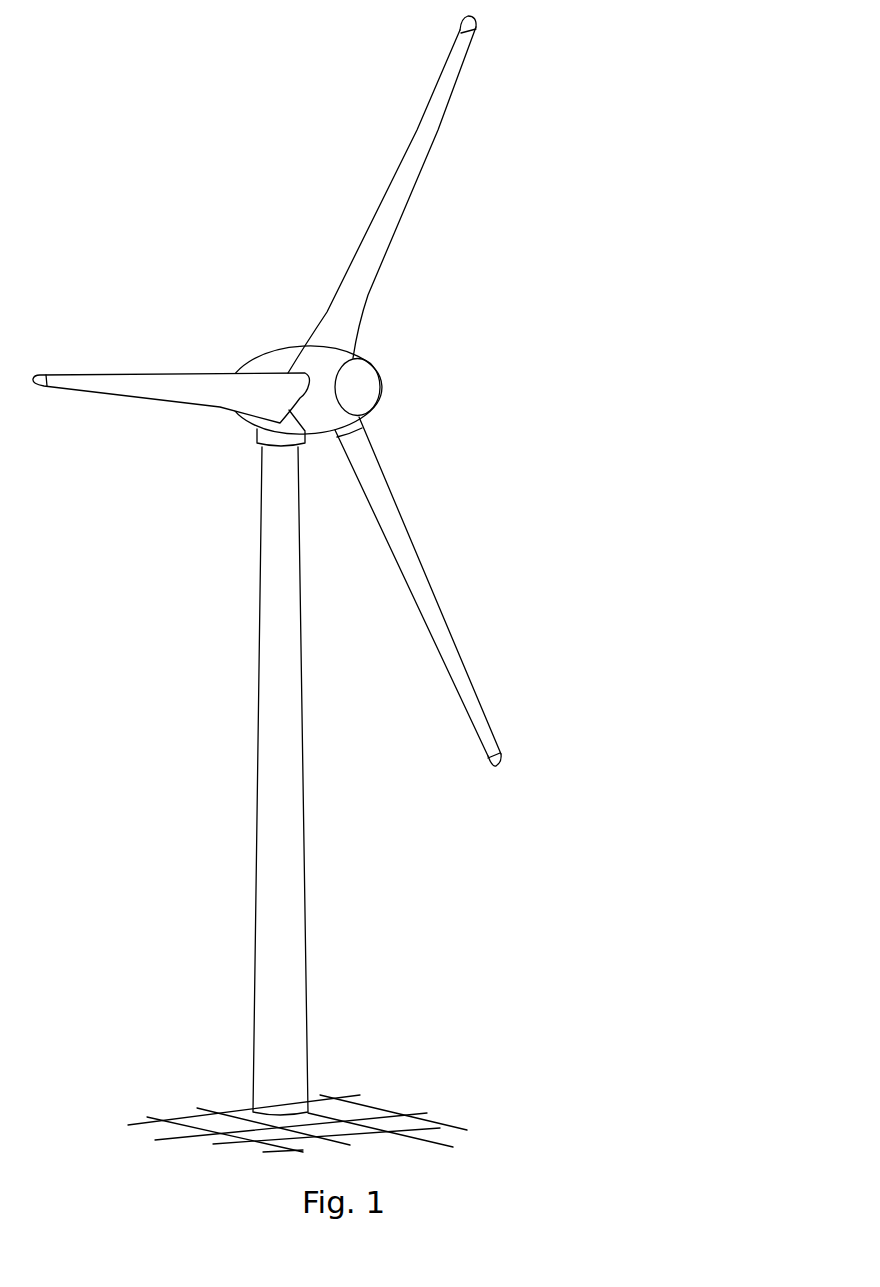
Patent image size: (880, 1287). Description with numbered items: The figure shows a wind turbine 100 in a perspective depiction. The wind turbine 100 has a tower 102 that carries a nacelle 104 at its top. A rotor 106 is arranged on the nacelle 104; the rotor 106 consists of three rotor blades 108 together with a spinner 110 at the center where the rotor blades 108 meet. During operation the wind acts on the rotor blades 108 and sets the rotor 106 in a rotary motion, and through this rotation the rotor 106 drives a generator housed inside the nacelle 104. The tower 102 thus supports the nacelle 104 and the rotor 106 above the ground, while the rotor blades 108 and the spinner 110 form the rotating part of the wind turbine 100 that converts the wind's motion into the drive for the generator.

The wind turbine 100 is at (311, 584).
The tower 102 is at (293, 853).
The nacelle 104 is at (278, 367).
The rotor 106 is at (311, 391).
The rotor blades 108 is at (417, 148).
The spinner 110 is at (362, 387).